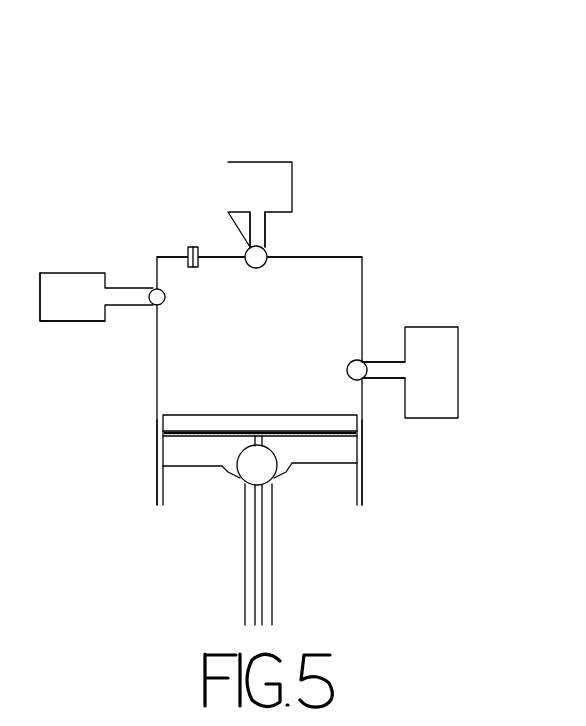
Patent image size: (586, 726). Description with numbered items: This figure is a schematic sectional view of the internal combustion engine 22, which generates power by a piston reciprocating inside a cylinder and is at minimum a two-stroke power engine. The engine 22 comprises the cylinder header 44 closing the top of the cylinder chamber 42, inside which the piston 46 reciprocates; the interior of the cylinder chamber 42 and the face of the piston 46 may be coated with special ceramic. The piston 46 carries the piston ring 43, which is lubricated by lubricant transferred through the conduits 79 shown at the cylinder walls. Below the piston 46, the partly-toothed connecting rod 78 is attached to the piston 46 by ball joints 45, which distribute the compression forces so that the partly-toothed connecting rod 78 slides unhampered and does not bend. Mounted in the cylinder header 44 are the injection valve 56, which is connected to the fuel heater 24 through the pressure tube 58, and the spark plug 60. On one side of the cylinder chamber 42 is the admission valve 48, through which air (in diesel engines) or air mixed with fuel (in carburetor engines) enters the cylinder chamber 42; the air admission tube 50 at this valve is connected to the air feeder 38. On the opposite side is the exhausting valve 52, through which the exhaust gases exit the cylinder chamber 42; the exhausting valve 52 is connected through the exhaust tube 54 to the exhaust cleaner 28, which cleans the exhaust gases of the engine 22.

The internal combustion engine 22 is at (268, 128).
The fuel heater 24 is at (278, 182).
The pressure tube 58 is at (261, 233).
The injection valve 56 is at (268, 250).
The spark plug 60 is at (187, 250).
The exhaust tube 54 is at (131, 292).
The exhaust cleaner 28 is at (60, 307).
The exhausting valve 52 is at (154, 302).
The cylinder chamber 42 is at (320, 298).
The cylinder header 44 is at (345, 253).
The admission valve 48 is at (363, 358).
The air feeder 38 is at (442, 375).
The air admission tube 50 is at (383, 378).
The piston ring 43 is at (165, 427).
The piston 46 is at (345, 436).
The conduits 79 is at (160, 495).
The ball joints 45 is at (360, 463).
The partly-toothed connecting rod 78 is at (265, 583).